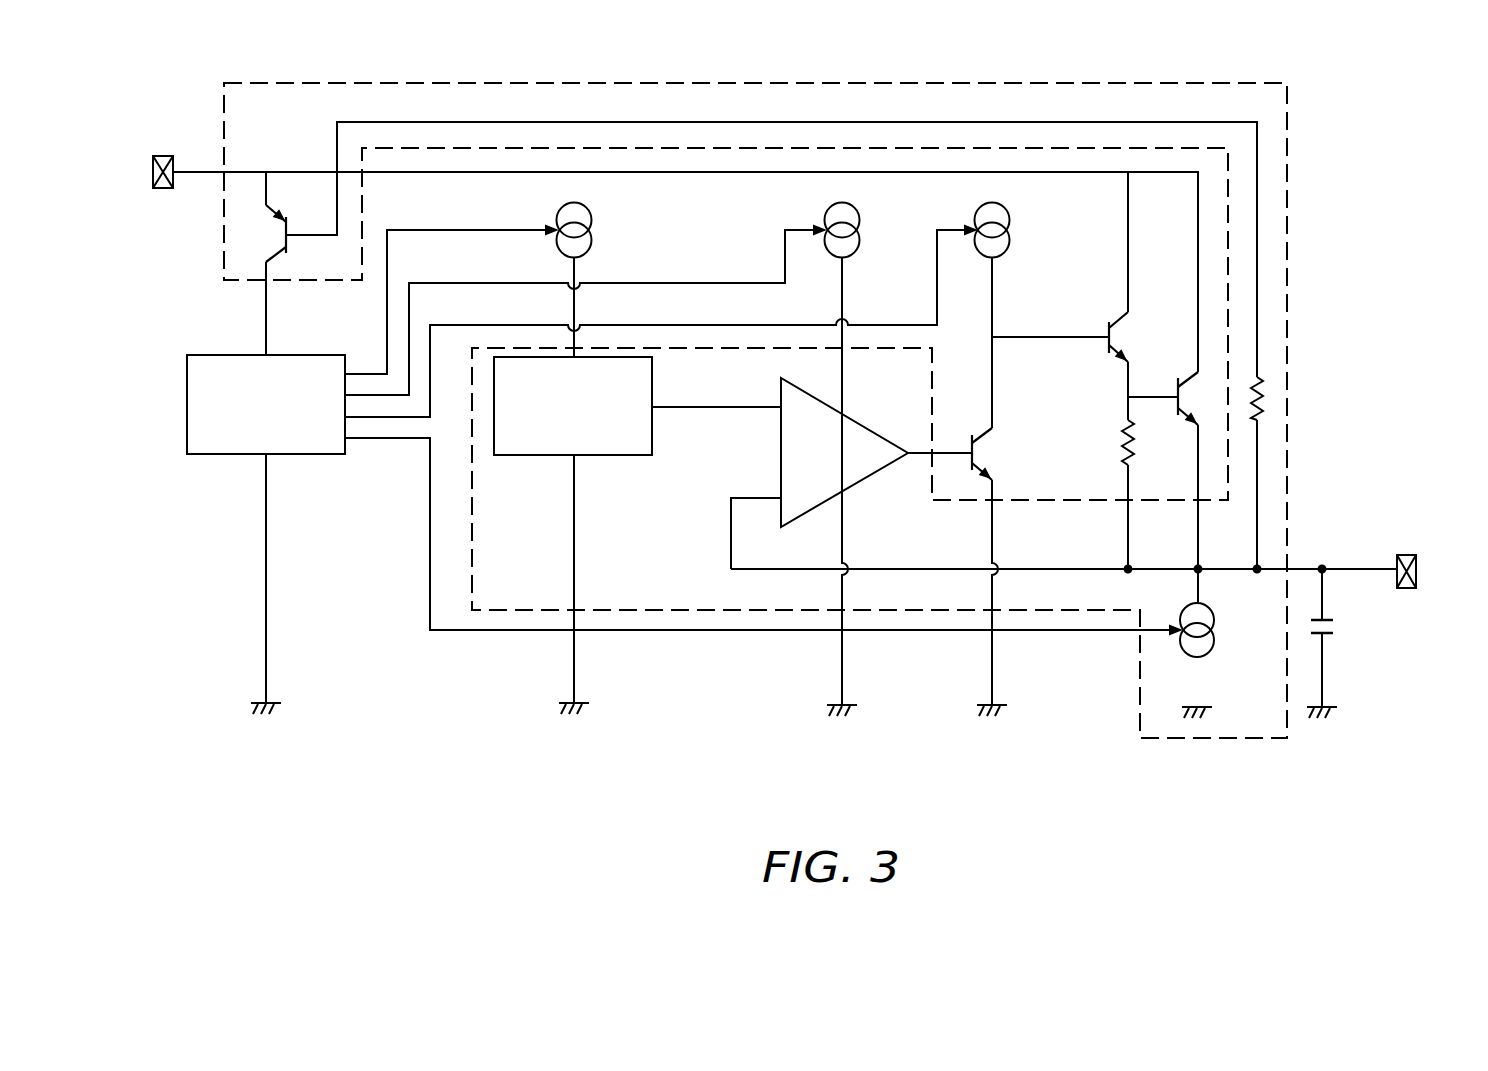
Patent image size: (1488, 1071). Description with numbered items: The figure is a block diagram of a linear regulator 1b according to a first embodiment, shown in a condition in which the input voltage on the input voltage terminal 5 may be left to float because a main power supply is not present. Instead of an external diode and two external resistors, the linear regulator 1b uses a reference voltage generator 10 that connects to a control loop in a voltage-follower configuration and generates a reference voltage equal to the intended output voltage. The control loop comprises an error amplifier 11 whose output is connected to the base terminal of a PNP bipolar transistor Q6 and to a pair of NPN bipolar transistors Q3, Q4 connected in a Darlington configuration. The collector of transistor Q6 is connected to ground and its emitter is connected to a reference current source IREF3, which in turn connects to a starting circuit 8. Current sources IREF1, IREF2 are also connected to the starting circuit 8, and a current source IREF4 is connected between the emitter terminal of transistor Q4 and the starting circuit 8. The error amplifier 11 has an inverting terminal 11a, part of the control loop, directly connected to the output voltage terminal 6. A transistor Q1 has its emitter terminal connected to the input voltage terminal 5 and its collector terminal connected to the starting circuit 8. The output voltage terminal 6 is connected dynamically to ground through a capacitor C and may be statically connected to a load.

The linear regulator 1b is at (281, 57).
The input voltage terminal 5 is at (165, 188).
The output voltage terminal 6 is at (1410, 553).
The starting circuit 8 is at (203, 437).
The reference voltage generator 10 is at (518, 451).
The error amplifier 11 is at (853, 487).
The inverting terminal 11a is at (732, 517).
The transistor Q1 is at (285, 235).
The transistor Q3 is at (1121, 333).
The transistor Q4 is at (1183, 392).
The bipolar transistor Q6 is at (985, 457).
The current source IREF1 is at (590, 212).
The current source IREF2 is at (858, 212).
The reference current source IREF3 is at (1008, 212).
The current source IREF4 is at (1210, 653).
The capacitor C is at (1334, 629).